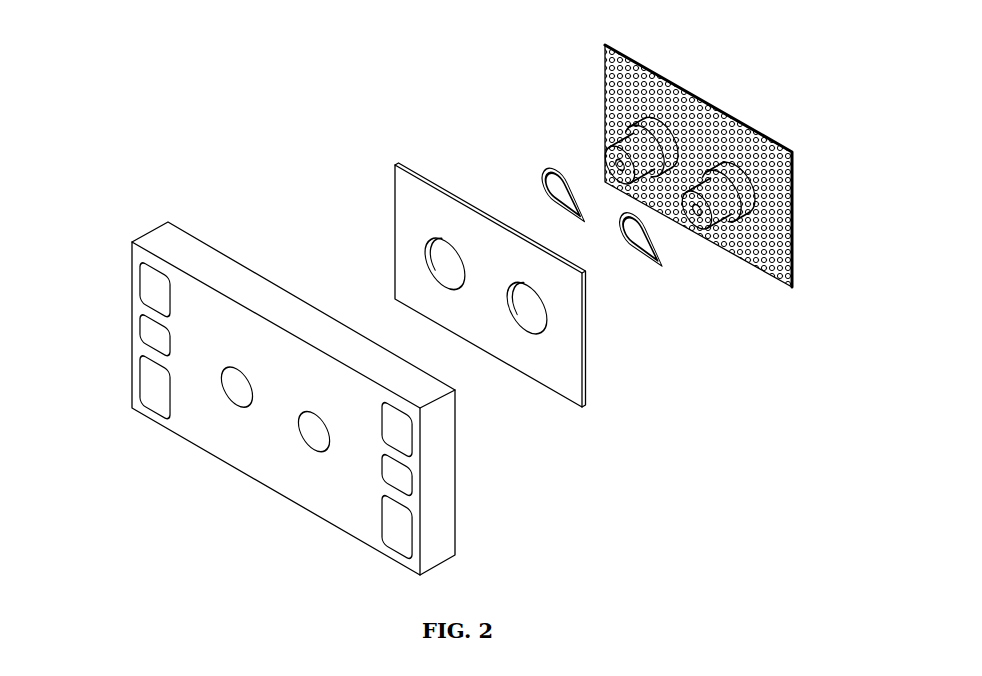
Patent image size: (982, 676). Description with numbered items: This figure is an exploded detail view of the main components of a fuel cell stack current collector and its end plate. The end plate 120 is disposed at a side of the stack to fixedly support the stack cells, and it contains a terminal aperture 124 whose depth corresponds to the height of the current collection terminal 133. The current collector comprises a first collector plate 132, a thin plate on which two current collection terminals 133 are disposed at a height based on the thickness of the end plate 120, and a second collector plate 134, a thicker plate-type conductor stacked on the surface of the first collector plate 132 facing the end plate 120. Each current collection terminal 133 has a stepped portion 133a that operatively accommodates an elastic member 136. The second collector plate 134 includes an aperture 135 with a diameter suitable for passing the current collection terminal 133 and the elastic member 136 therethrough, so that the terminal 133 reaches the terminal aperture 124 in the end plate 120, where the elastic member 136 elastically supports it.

The end plate 120 is at (143, 228).
The terminal aperture 124 is at (233, 390).
The first collector plate 132 is at (595, 70).
The current collection terminal 133 is at (745, 217).
The stepped portion 133a is at (737, 218).
The second collector plate 134 is at (388, 180).
The aperture 135 is at (520, 327).
The elastic member 136 is at (640, 265).